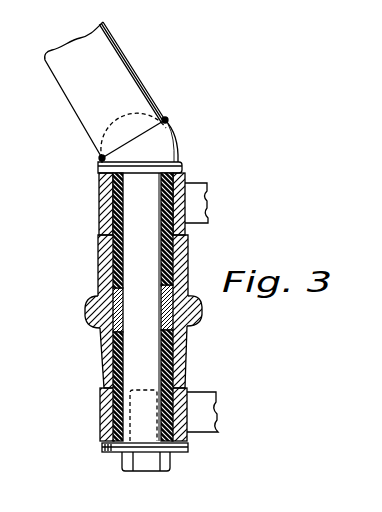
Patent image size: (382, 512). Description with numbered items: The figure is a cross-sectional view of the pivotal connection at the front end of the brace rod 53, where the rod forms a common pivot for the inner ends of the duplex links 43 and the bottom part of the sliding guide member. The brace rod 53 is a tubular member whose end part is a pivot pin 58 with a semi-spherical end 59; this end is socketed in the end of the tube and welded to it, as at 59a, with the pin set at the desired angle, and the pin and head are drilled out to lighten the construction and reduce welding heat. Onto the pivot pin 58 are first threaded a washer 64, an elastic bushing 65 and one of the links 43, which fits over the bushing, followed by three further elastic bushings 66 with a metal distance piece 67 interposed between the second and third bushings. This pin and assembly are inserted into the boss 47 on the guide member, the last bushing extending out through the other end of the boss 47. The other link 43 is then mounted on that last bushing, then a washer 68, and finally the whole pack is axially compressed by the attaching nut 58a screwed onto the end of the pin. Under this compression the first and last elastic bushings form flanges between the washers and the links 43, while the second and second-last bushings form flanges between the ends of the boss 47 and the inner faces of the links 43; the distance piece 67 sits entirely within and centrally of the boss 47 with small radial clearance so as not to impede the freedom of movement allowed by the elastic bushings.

The brace rod 53 is at (135, 83).
The semi-spherical end 59 is at (147, 146).
The weld 59a is at (101, 159).
The washer 64 is at (178, 166).
The elastic bushing 65 is at (113, 199).
The duplex links 43 is at (208, 203).
The elastic bushings 66 is at (187, 250).
The metal distance piece 67 is at (113, 296).
The boss 47 is at (185, 320).
The pivot pin 58 is at (155, 361).
The washer 68 is at (106, 451).
The attaching nut 58a is at (149, 468).